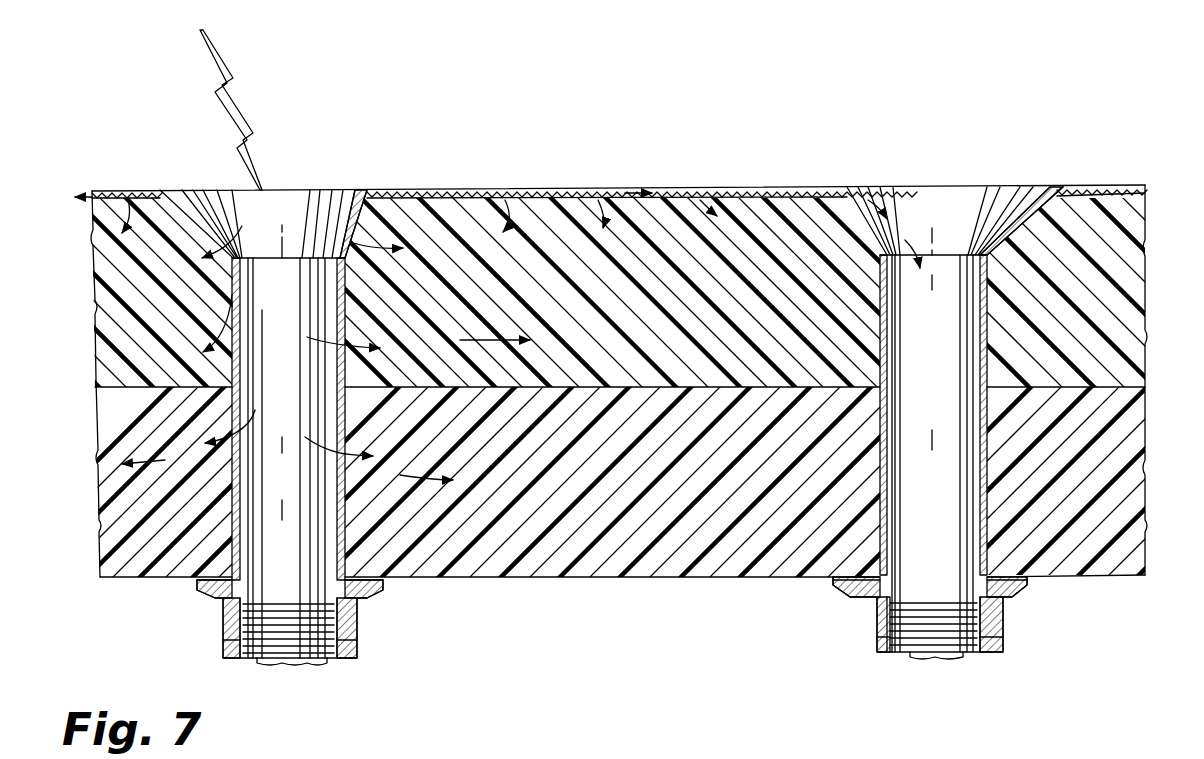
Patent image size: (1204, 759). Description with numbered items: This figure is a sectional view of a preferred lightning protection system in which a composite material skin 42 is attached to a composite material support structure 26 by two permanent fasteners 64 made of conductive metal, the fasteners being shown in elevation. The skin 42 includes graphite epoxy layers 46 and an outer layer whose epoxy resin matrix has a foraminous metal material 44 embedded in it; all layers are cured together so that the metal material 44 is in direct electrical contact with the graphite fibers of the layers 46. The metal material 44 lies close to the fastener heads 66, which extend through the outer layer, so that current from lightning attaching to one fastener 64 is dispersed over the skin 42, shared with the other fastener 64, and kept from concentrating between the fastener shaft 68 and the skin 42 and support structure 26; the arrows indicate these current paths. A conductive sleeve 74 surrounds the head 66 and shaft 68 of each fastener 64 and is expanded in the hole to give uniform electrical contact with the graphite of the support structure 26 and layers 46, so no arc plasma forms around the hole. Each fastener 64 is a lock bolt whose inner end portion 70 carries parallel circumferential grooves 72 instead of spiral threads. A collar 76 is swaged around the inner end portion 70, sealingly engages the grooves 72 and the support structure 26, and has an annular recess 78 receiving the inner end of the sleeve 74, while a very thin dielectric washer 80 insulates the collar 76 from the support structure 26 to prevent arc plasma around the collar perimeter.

The composite material support structure 26 is at (1133, 481).
The composite material skin 42 is at (1150, 190).
The foraminous metal material 44 is at (550, 189).
The graphite epoxy layers 46 is at (648, 318).
The permanent fastener 64 is at (287, 188).
The fastener head 66 is at (312, 203).
The fastener shaft 68 is at (300, 376).
The inner end portion 70 is at (261, 658).
The parallel circumferential grooves 72 is at (337, 627).
The conductive sleeve 74 is at (228, 290).
The collar 76 is at (223, 640).
The annular recess 78 is at (357, 603).
The washer 80 is at (200, 586).